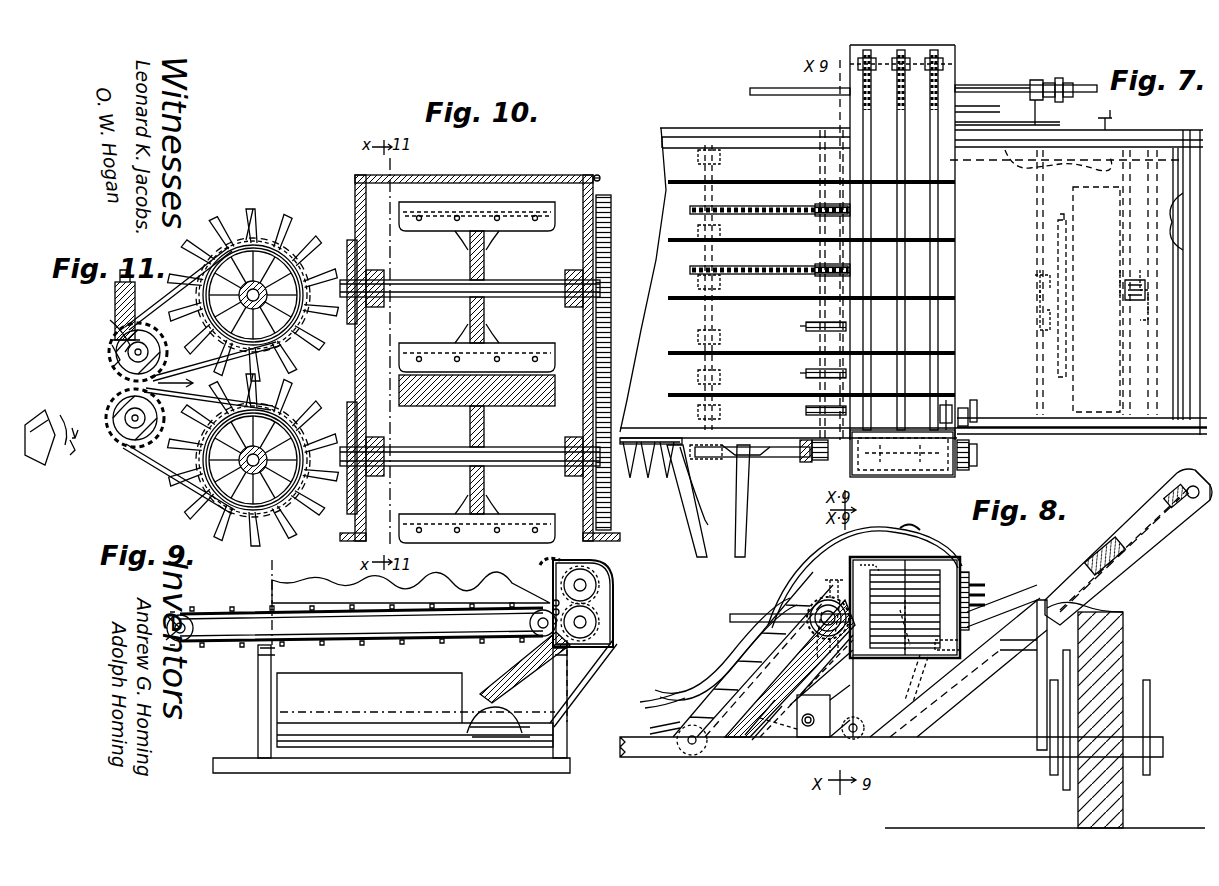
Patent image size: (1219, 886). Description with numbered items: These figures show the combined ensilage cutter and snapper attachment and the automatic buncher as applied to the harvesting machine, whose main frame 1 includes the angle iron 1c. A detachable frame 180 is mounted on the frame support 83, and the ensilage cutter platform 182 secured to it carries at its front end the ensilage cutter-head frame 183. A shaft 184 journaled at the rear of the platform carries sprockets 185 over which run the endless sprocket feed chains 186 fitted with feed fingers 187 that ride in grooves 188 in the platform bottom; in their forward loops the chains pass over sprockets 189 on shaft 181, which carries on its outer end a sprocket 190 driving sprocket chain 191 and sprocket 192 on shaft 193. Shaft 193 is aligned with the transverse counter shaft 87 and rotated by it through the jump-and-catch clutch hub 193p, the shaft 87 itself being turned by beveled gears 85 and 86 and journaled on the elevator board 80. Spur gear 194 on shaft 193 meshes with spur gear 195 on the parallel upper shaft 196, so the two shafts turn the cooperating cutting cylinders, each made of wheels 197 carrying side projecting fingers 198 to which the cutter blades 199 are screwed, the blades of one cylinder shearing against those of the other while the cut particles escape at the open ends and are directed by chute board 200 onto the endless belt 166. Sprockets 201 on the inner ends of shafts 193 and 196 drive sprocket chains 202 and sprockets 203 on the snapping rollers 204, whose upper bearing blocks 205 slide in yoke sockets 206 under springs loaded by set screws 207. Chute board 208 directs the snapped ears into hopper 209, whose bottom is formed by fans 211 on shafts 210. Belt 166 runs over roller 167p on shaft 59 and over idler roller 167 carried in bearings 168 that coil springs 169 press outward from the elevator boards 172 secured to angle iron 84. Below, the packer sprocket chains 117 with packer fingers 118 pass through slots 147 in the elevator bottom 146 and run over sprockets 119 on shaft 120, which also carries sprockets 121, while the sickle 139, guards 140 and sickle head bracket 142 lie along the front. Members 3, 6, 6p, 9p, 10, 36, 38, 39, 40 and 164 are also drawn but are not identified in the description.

In FIG. 7, the main frame 1 is at (655, 145).
In FIG. 8, the angle iron 1c is at (960, 760).
In FIG. 7, the axle 3 is at (1090, 290).
In FIG. 8, the axle 3 is at (1085, 785).
In FIG. 7, the rod 6 is at (1045, 310).
In FIG. 7, the rod 6p is at (1140, 318).
In FIG. 8, the rod 6p is at (1050, 760).
In FIG. 7, the bracket 9p is at (1125, 300).
In FIG. 7, the bar 10 is at (1112, 128).
In FIG. 7, the lever 36 is at (1058, 248).
In FIG. 7, the hub 38 is at (1060, 78).
In FIG. 7, the rail 39 is at (750, 92).
In FIG. 7, the support 40 is at (1040, 115).
In FIG. 8, the shaft 59 is at (806, 730).
In FIG. 8, the elevator board 80 is at (685, 755).
In FIG. 8, the frame support 83 is at (990, 680).
In FIG. 8, the angle iron 84 is at (1112, 614).
In FIG. 8, the beveled gear 85 is at (815, 605).
In FIG. 7, the beveled gear 86 is at (815, 462).
In FIG. 8, the beveled gear 86 is at (808, 600).
In FIG. 7, the transverse counter shaft 87 is at (775, 460).
In FIG. 8, the transverse counter shaft 87 is at (790, 612).
In FIG. 7, the endless packer sprocket chains 117 is at (762, 272).
In FIG. 8, the endless packer sprocket chains 117 is at (690, 700).
In FIG. 8, the packer fingers 118 is at (708, 680).
In FIG. 7, the sprockets 119 is at (690, 330).
In FIG. 7, the shaft 120 is at (715, 250).
In FIG. 7, the sprockets 121 is at (725, 382).
In FIG. 7, the sickle 139 is at (672, 480).
In FIG. 7, the guards 140 is at (640, 438).
In FIG. 7, the sickle head bracket 142 is at (728, 462).
In FIG. 7, the elevator bottom 146 is at (805, 326).
In FIG. 8, the elevator bottom 146 is at (740, 655).
In FIG. 7, the slots 147 is at (825, 198).
In FIG. 7, the bar 164 is at (760, 172).
In FIG. 7, the endless belt 166 is at (1160, 175).
In FIG. 9, the endless belt 166 is at (530, 740).
In FIG. 8, the endless belt 166 is at (1075, 560).
In FIG. 7, the idler roller 167 is at (1180, 221).
In FIG. 9, the roller 167p is at (490, 745).
In FIG. 8, the bearings 168 is at (1210, 495).
In FIG. 8, the coil springs 169 is at (1190, 485).
In FIG. 8, the elevator boards 172 is at (1125, 520).
In FIG. 8, the detachable frame 180 is at (1085, 606).
In FIG. 7, the shaft 181 is at (950, 405).
In FIG. 7, the ensilage cutter platform 182 is at (930, 225).
In FIG. 9, the ensilage cutter platform 182 is at (245, 615).
In FIG. 10, the ensilage cutter-head frame 183 is at (594, 174).
In FIG. 9, the ensilage cutter-head frame 183 is at (600, 585).
In FIG. 8, the ensilage cutter-head frame 183 is at (830, 600).
In FIG. 7, the shaft 184 is at (945, 72).
In FIG. 9, the shaft 184 is at (188, 640).
In FIG. 7, the sprockets 185 is at (958, 92).
In FIG. 9, the sprockets 185 is at (178, 612).
In FIG. 7, the endless sprocket feed chains 186 is at (957, 105).
In FIG. 9, the endless sprocket feed chains 186 is at (375, 645).
In FIG. 9, the feed fingers 187 is at (440, 643).
In FIG. 8, the feed fingers 187 is at (925, 630).
In FIG. 7, the grooves 188 is at (958, 300).
In FIG. 7, the sprockets 189 is at (965, 410).
In FIG. 9, the sprockets 189 is at (545, 622).
In FIG. 7, the sprocket 190 is at (976, 412).
In FIG. 7, the sprocket chain 191 is at (972, 448).
In FIG. 7, the sprocket 192 is at (978, 460).
In FIG. 8, the sprocket 192 is at (975, 648).
In FIG. 10, the shaft 193 is at (440, 452).
In FIG. 9, the shaft 193 is at (600, 620).
In FIG. 8, the shaft 193 is at (1085, 555).
In FIG. 8, the jump-and-catch clutch hub 193p is at (830, 600).
In FIG. 7, the spur gear 194 is at (655, 470).
In FIG. 8, the spur gear 194 is at (1000, 605).
In FIG. 10, the spur gear 195 is at (608, 235).
In FIG. 8, the spur gear 195 is at (970, 592).
In FIG. 10, the shaft 196 is at (452, 300).
In FIG. 7, the shaft 196 is at (952, 477).
In FIG. 9, the shaft 196 is at (615, 597).
In FIG. 8, the shaft 196 is at (957, 568).
In FIG. 10, the wheels 197 is at (478, 282).
In FIG. 11, the side projecting flanges or fingers 198 is at (282, 235).
In FIG. 10, the side projecting flanges or fingers 198 is at (450, 240).
In FIG. 11, the cutter blades 199 is at (262, 235).
In FIG. 10, the cutter blades 199 is at (505, 216).
In FIG. 9, the chute board 200 is at (580, 700).
In FIG. 8, the chute board 200 is at (920, 680).
In FIG. 11, the sprockets 201 is at (232, 230).
In FIG. 10, the sprockets 201 is at (350, 242).
In FIG. 7, the sprockets 201 is at (850, 462).
In FIG. 8, the sprockets 201 is at (860, 580).
In FIG. 11, the sprocket chains 202 is at (220, 270).
In FIG. 11, the sprockets 203 is at (104, 389).
In FIG. 11, the snapping rollers 204 is at (125, 345).
In FIG. 9, the snapping rollers 204 is at (555, 575).
In FIG. 8, the snapping rollers 204 is at (905, 578).
In FIG. 11, the bearing blocks 205 is at (110, 345).
In FIG. 8, the bearing blocks 205 is at (905, 525).
In FIG. 11, the yoke sockets 206 is at (108, 320).
In FIG. 11, the set screws 207 is at (114, 300).
In FIG. 9, the chute board 208 is at (492, 685).
In FIG. 8, the chute board 208 is at (855, 740).
In FIG. 8, the hopper 209 is at (780, 745).
In FIG. 8, the shafts 210 is at (845, 735).
In FIG. 8, the fans 211 is at (795, 745).